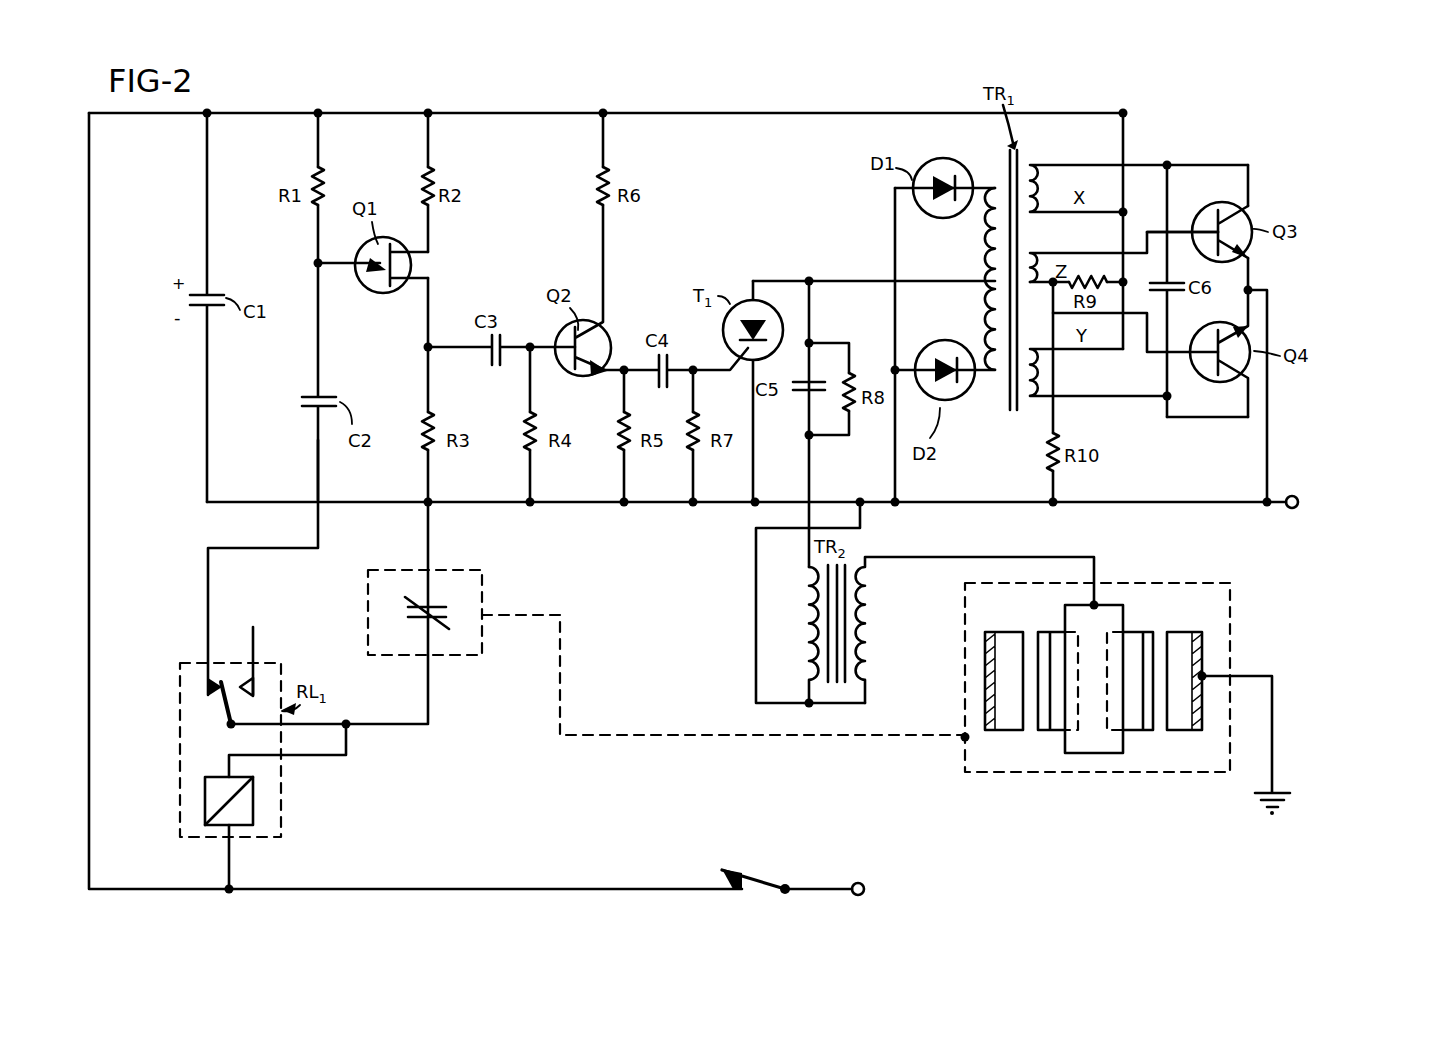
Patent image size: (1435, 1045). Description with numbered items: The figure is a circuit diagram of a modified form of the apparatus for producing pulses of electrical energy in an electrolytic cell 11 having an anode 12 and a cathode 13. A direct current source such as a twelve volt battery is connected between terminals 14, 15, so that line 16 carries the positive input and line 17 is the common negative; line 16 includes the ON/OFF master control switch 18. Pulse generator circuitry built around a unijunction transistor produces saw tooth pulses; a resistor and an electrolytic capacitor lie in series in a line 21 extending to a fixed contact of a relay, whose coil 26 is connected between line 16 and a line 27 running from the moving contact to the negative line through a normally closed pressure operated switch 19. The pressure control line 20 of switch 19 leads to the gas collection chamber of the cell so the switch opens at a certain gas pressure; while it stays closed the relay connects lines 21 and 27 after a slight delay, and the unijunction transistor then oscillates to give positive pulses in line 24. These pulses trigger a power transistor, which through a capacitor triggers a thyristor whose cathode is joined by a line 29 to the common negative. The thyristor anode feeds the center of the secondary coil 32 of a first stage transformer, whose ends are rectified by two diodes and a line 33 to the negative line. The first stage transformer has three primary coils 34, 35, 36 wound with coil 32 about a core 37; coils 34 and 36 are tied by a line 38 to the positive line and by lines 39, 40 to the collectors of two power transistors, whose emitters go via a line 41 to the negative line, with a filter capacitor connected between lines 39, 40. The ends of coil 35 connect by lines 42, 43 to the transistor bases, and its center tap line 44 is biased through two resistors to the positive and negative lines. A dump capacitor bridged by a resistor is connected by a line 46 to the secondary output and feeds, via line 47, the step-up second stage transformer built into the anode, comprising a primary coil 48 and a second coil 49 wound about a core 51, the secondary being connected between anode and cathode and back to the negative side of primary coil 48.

The electrolytic cell 11 is at (1153, 576).
The anode 12 is at (1113, 619).
The cathode 13 is at (1200, 718).
The terminal 14 is at (858, 883).
The terminal 15 is at (1293, 509).
The line 16 is at (672, 113).
The line 17 is at (1093, 504).
The master control switch 18 is at (765, 876).
The pressure operated switch 19 is at (450, 658).
The pressure control line 20 is at (620, 737).
The line 21 is at (314, 457).
The line 24 is at (430, 292).
The coil 26 is at (247, 800).
The line 27 is at (400, 726).
The line 29 is at (755, 452).
The secondary coil 32 is at (990, 187).
The line 33 is at (897, 468).
The primary coil 34 is at (1036, 185).
The primary coil 35 is at (1041, 258).
The primary coil 36 is at (1042, 404).
The core 37 is at (1008, 415).
The line 38 is at (1126, 132).
The line 39 is at (1247, 165).
The line 40 is at (1230, 418).
The line 41 is at (1269, 406).
The line 42 is at (1178, 232).
The line 43 is at (1152, 358).
The line 44 is at (1046, 296).
The line 46 is at (809, 306).
The line 47 is at (811, 460).
The primary coil 48 is at (810, 628).
The second coil 49 is at (866, 622).
The core 51 is at (838, 690).